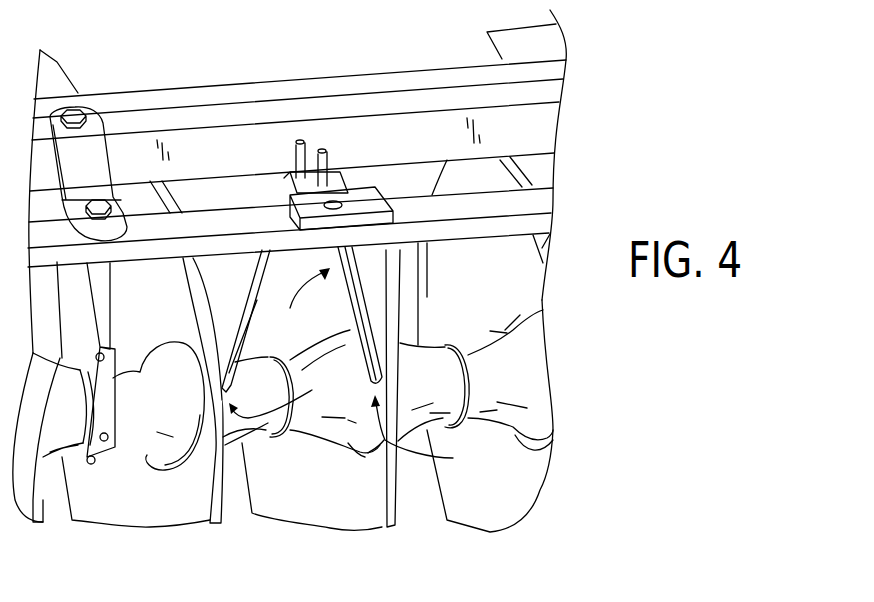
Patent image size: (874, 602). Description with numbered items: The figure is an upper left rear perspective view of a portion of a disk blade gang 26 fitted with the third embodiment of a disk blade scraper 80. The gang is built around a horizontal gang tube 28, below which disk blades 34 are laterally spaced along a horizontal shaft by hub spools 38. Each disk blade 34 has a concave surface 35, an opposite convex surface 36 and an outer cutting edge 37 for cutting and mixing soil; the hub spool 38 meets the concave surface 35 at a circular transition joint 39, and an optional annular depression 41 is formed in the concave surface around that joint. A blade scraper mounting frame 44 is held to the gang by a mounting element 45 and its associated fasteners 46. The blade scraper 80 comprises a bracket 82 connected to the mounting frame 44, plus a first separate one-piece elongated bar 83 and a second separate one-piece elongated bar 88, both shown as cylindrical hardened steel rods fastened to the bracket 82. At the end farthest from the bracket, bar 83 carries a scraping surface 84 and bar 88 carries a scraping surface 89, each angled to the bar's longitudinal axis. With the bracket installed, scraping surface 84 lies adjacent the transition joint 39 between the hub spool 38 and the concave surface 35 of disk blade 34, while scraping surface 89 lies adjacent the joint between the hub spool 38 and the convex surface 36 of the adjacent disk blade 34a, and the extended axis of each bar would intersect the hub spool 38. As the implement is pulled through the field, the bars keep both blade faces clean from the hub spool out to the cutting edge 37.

The disk blade gang 26 is at (634, 435).
The horizontal gang tube 28 is at (422, 97).
The disk blade 34 is at (303, 507).
The disk blade 34a is at (107, 507).
The concave surface 35 is at (340, 490).
The convex surface 36 is at (236, 510).
The cutting edge 37 is at (395, 500).
The hub spool 38 is at (163, 440).
The circular transition joint 39 is at (365, 455).
The annular depression 41 is at (182, 333).
The blade scraper mounting frame 44 is at (540, 198).
The mounting element 45 is at (90, 155).
The fasteners 46 is at (74, 110).
The disk blade scraper 80 is at (306, 305).
The bracket 82 is at (362, 165).
The first elongated bar 83 is at (346, 258).
The scraping surface 84 is at (429, 435).
The second elongated bar 88 is at (253, 321).
The scraping surface 89 is at (287, 398).